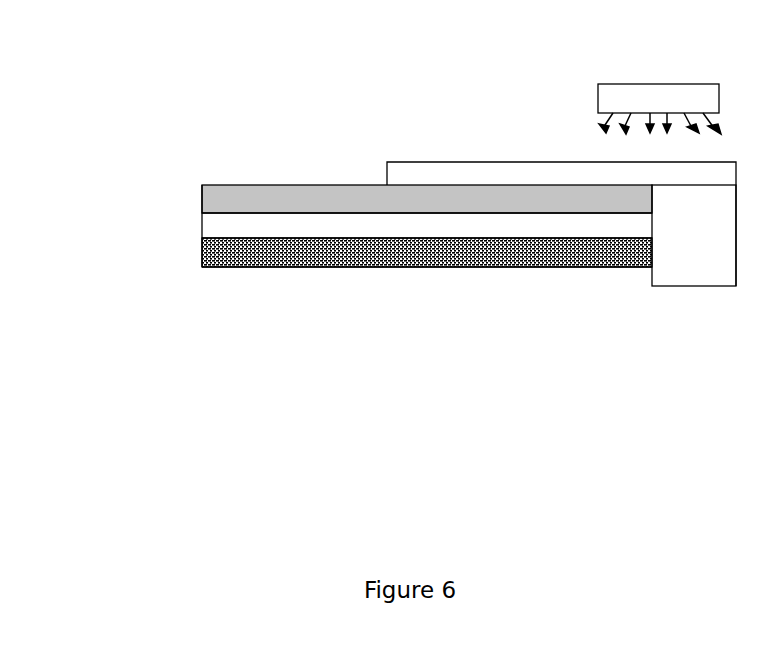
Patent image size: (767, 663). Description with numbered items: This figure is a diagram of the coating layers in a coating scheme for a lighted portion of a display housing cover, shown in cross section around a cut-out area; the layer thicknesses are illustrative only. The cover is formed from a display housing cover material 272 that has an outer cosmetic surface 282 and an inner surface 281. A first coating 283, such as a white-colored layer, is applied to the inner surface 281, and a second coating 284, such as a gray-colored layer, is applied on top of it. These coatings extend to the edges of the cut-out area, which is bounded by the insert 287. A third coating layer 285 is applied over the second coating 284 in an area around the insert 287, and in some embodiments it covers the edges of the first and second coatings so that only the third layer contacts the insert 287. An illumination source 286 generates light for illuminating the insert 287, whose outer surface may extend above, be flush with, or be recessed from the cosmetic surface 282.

The display housing cover material 272 is at (568, 258).
The inner surface 281 is at (202, 240).
The cosmetic surface 282 is at (372, 268).
The first coating 283 is at (563, 221).
The second coating 284 is at (485, 200).
The third coating layer 285 is at (402, 175).
The illumination source 286 is at (659, 81).
The insert 287 is at (694, 235).